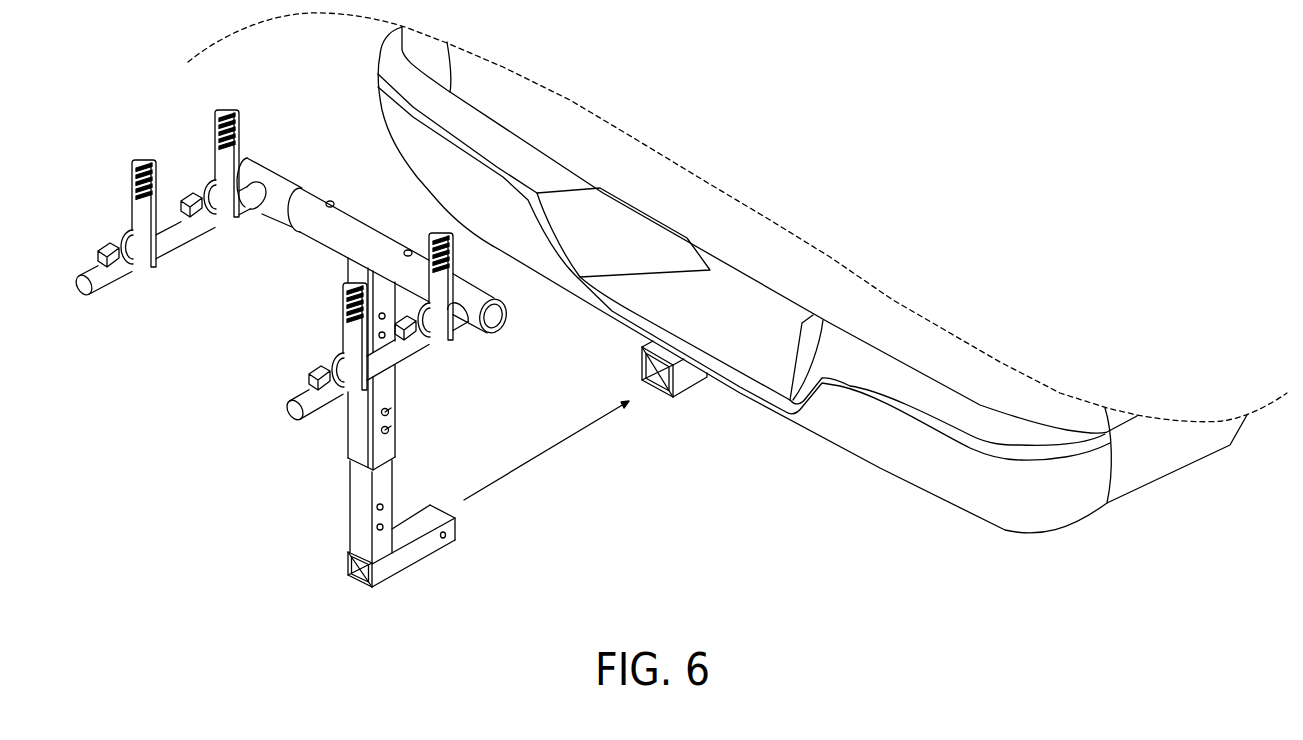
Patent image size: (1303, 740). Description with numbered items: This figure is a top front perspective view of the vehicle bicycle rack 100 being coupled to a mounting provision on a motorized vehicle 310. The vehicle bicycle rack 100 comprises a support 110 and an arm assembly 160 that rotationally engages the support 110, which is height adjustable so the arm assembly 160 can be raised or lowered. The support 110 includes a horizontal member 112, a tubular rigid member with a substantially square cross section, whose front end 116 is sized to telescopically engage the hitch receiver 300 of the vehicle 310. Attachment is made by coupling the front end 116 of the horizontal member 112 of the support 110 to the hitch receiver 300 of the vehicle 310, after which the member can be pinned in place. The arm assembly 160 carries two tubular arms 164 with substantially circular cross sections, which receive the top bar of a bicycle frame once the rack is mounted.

The vehicle bicycle rack 100 is at (176, 403).
The support 110 is at (340, 441).
The horizontal member 112 is at (407, 553).
The front end 116 is at (433, 507).
The arm assembly 160 is at (286, 166).
The arms 164 is at (175, 238).
The hitch receiver 300 is at (679, 383).
The motorized vehicle 310 is at (868, 444).